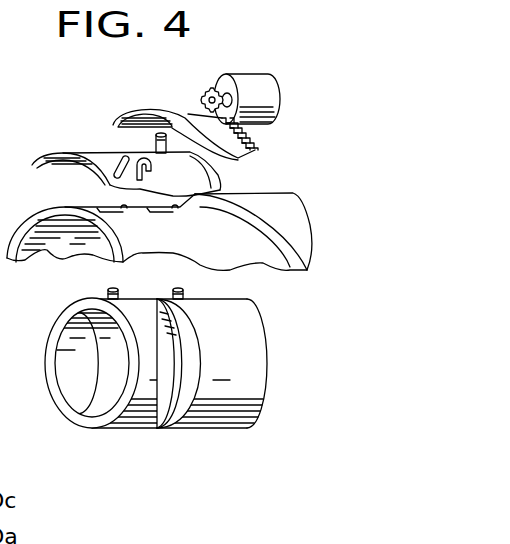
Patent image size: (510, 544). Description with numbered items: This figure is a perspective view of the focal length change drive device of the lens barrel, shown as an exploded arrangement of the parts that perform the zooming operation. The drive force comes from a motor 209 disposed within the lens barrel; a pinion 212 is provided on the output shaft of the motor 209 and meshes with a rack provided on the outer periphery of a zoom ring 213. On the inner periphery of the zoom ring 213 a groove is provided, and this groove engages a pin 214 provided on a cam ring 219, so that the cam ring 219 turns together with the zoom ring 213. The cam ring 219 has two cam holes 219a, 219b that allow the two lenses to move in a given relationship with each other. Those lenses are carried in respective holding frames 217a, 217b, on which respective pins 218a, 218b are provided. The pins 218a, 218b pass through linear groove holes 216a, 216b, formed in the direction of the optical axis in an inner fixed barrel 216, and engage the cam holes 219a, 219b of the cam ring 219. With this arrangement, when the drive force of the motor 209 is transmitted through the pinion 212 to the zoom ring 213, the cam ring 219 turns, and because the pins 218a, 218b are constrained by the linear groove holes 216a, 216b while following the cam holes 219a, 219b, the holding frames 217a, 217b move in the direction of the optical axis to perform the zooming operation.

The motor 209 is at (272, 92).
The pinion 212 is at (203, 92).
The zoom ring 213 is at (187, 113).
The pin 214 is at (154, 150).
The inner fixed barrel 216 is at (293, 207).
The linear groove hole 216a is at (126, 212).
The linear groove hole 216b is at (178, 209).
The holding frame 217a is at (147, 400).
The holding frame 217b is at (253, 345).
The pin 218a is at (110, 292).
The pin 218b is at (180, 290).
The cam ring 219 is at (102, 163).
The cam hole 219a is at (114, 158).
The cam hole 219b is at (151, 172).